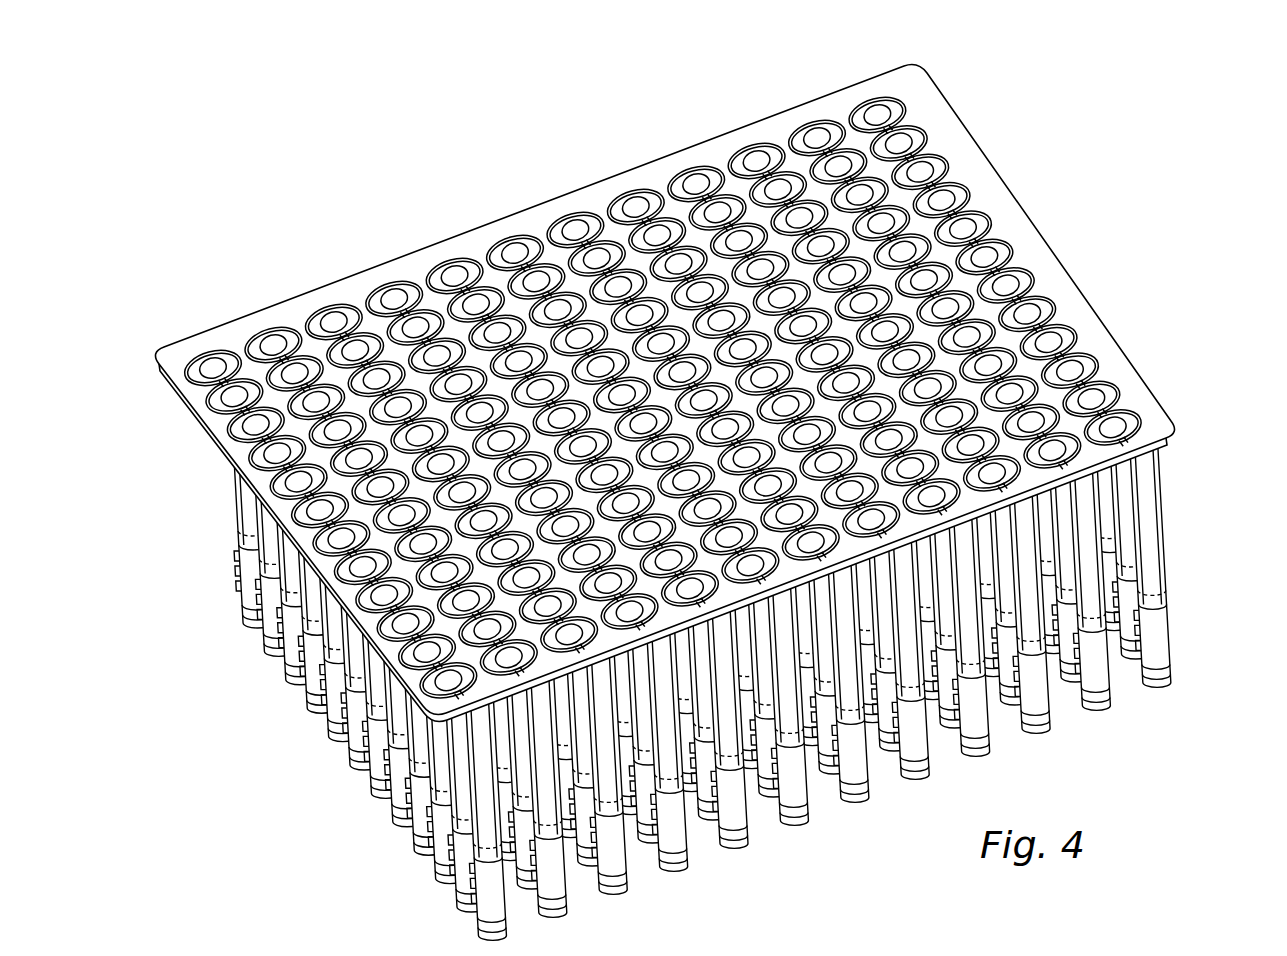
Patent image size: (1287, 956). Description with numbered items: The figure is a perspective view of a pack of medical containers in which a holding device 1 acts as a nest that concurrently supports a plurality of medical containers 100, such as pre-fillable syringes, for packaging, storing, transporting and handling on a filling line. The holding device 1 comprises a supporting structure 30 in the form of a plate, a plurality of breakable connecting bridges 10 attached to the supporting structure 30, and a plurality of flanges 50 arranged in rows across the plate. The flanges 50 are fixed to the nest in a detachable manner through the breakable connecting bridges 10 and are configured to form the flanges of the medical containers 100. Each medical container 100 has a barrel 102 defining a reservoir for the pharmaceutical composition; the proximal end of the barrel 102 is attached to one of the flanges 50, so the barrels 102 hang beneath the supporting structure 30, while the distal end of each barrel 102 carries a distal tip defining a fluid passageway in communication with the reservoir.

The holding device 1 is at (1072, 140).
The supporting structure 30 is at (778, 112).
The flanges 50 is at (672, 398).
The breakable connecting bridges 10 is at (1072, 333).
The medical containers 100 is at (740, 598).
The barrel 102 is at (1142, 498).